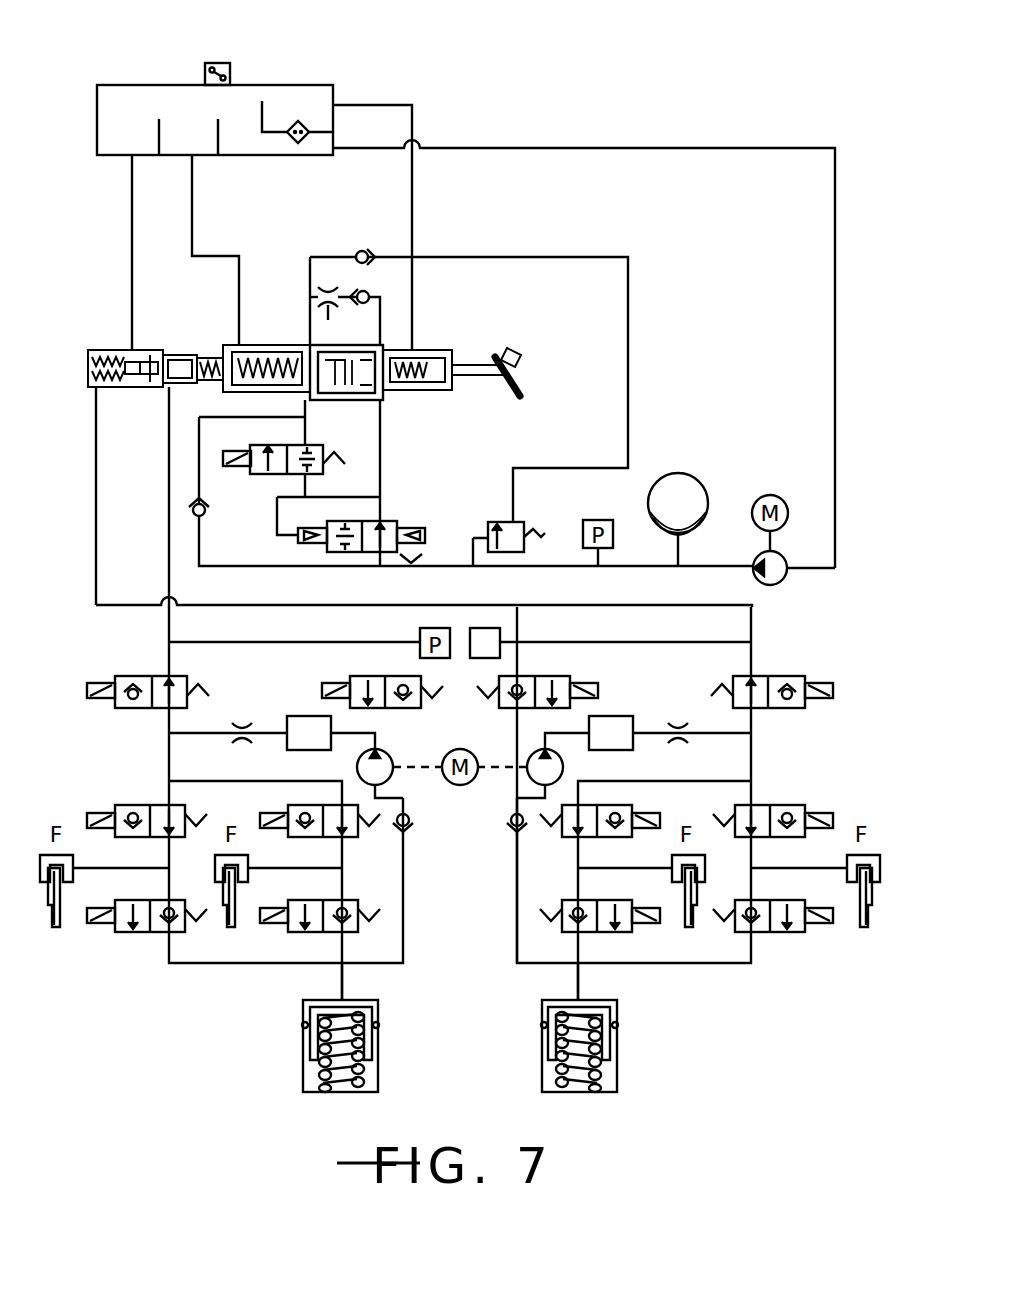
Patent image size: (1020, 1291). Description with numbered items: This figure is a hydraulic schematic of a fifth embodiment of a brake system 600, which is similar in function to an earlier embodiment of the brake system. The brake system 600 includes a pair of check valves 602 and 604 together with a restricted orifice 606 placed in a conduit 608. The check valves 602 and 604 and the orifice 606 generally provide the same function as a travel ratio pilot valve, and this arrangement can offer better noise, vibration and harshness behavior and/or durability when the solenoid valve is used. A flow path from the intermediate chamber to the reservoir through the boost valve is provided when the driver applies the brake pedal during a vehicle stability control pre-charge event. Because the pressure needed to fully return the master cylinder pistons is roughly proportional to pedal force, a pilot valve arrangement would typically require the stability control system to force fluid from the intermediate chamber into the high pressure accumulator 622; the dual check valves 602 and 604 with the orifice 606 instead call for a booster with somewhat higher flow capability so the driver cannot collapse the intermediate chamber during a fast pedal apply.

The brake system 600 is at (660, 88).
The check valve 602 is at (360, 249).
The check valve 604 is at (372, 294).
The restricted orifice 606 is at (330, 318).
The conduit 608 is at (312, 288).
The high pressure accumulator 622 is at (680, 473).